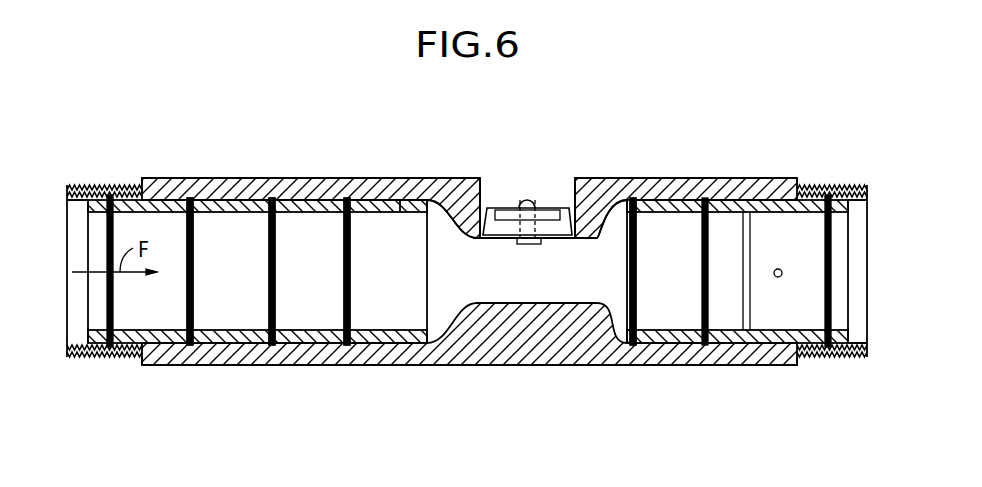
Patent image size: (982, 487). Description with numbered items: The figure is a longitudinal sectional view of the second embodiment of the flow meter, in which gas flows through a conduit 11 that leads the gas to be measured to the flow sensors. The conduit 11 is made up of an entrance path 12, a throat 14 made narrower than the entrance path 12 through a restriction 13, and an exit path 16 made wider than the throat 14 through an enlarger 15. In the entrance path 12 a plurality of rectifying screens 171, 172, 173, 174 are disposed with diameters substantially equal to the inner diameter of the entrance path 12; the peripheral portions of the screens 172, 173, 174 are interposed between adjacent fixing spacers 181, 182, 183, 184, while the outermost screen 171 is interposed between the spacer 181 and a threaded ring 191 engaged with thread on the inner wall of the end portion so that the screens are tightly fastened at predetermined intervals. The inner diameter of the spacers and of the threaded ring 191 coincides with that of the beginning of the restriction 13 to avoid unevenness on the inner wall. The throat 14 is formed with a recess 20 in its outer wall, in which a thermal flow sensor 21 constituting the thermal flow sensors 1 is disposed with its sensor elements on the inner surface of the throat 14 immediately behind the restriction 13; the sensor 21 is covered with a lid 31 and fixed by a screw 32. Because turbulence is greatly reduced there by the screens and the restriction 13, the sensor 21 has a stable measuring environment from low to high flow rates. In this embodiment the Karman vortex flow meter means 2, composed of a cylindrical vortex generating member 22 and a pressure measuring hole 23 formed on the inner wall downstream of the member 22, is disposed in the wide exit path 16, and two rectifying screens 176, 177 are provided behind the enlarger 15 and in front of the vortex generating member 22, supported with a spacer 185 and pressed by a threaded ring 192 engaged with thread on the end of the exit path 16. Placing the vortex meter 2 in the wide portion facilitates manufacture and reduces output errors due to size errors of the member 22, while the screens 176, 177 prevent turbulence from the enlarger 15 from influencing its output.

The thermal flow sensors 1 is at (545, 206).
The Karman vortex flow meter means 2 is at (763, 328).
The conduit 11 is at (157, 165).
The entrance path 12 is at (215, 315).
The restriction 13 is at (443, 303).
The throat 14 is at (495, 290).
The enlarger 15 is at (618, 212).
The exit path 16 is at (802, 322).
The rectifying screen 171 is at (93, 347).
The rectifying screen 172 is at (188, 325).
The rectifying screen 173 is at (272, 312).
The rectifying screen 174 is at (350, 303).
The rectifying screen 176 is at (634, 340).
The rectifying screen 177 is at (705, 335).
The fixing spacer 181 is at (177, 198).
The fixing spacer 182 is at (240, 198).
The fixing spacer 183 is at (330, 178).
The fixing spacer 184 is at (400, 178).
The spacer 185 is at (778, 215).
The threaded ring 191 is at (101, 192).
The threaded ring 192 is at (837, 197).
The recess 20 is at (482, 180).
The thermal flow sensor 21 is at (527, 244).
The vortex generating member 22 is at (746, 312).
The pressure measuring hole 23 is at (779, 278).
The lid 31 is at (553, 208).
The screw 32 is at (541, 203).